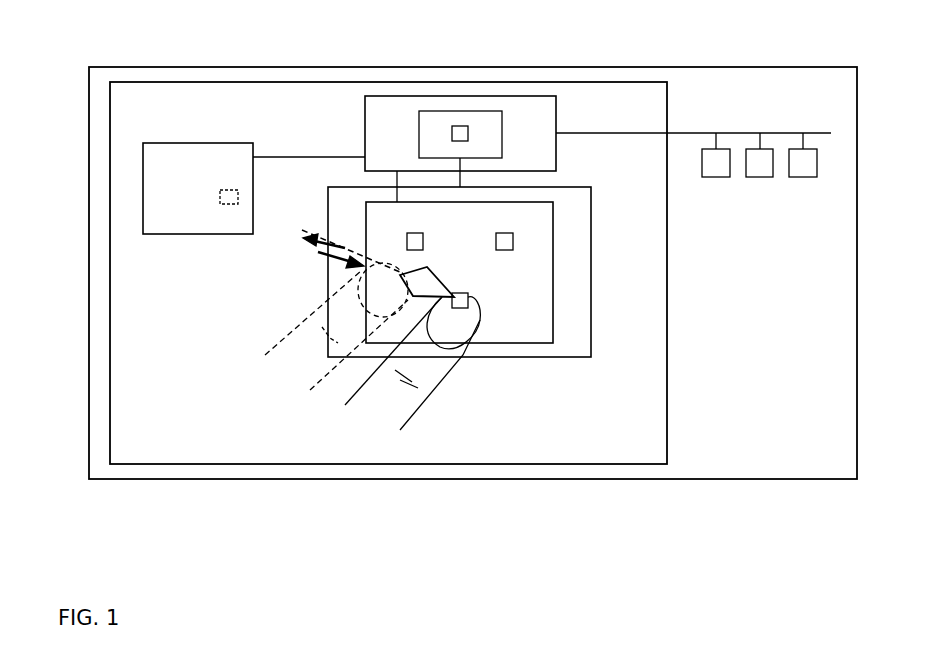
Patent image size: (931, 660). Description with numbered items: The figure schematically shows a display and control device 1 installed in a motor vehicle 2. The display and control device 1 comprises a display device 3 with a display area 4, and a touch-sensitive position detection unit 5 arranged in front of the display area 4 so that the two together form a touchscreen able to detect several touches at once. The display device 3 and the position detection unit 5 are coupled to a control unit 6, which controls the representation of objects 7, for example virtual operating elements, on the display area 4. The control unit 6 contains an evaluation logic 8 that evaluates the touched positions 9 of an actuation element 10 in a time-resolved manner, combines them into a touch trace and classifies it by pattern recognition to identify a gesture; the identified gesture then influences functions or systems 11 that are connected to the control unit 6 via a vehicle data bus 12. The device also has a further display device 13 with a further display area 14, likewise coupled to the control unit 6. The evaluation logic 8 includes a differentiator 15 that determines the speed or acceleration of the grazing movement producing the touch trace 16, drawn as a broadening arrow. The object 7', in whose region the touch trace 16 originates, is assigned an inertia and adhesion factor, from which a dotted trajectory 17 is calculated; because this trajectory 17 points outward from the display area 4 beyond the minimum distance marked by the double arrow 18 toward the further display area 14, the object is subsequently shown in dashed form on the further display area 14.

The display and control device 1 is at (357, 465).
The motor vehicle 2 is at (732, 479).
The display device 3 is at (536, 343).
The display area 4 is at (497, 331).
The touch-sensitive position detection unit 5 is at (576, 357).
The control unit 6 is at (529, 97).
The objects 7 is at (524, 197).
The object 7' is at (353, 299).
The evaluation logic 8 is at (485, 112).
The touched positions 9 is at (458, 300).
The actuation element 10 is at (417, 410).
The functions or systems 11 is at (717, 168).
The vehicle data bus 12 is at (687, 133).
The further display device 13 is at (217, 143).
The further display area 14 is at (170, 152).
The differentiator 15 is at (457, 127).
The touch trace 16 is at (430, 284).
The trajectory 17 is at (339, 245).
The double arrow 18 is at (340, 258).